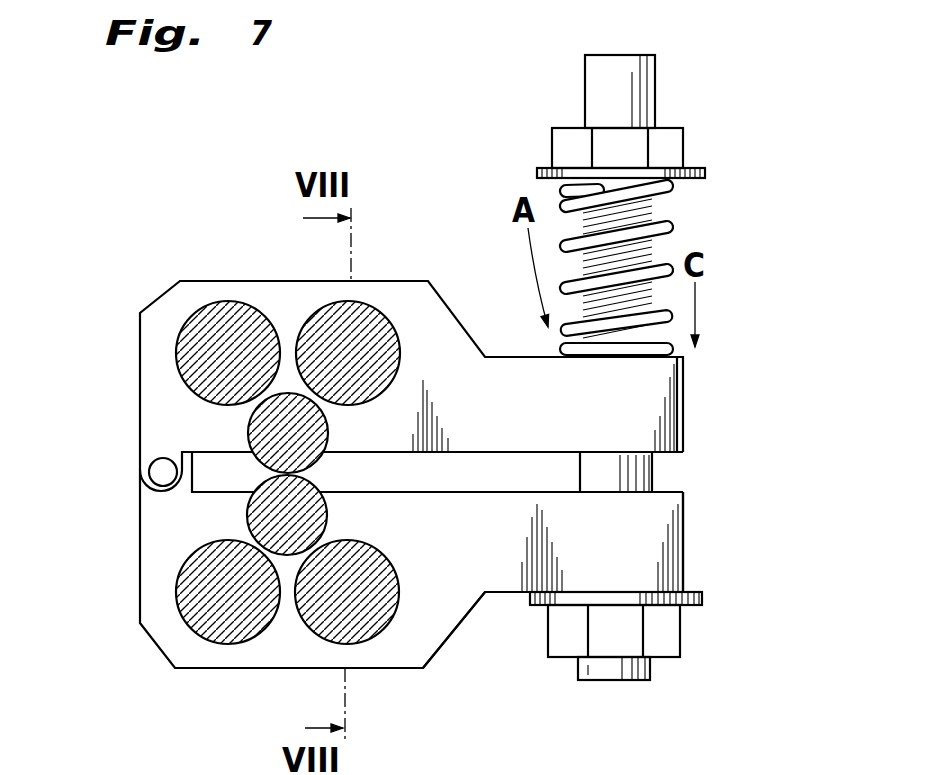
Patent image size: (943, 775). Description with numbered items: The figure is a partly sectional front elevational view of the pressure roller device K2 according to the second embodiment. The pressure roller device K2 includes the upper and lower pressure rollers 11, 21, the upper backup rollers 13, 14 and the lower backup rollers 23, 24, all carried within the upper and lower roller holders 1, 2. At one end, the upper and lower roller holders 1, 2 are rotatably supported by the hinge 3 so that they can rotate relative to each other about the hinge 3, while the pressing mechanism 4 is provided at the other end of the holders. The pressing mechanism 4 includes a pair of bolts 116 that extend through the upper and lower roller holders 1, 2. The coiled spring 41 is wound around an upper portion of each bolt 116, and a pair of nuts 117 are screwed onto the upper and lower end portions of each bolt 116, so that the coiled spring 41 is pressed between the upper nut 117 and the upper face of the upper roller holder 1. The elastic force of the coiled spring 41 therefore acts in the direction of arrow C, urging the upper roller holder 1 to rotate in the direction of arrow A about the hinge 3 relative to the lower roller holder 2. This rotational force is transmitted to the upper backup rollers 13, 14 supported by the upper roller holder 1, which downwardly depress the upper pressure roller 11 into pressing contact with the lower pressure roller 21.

The upper roller holder 1 is at (443, 333).
The lower roller holder 2 is at (503, 577).
The hinge 3 is at (150, 467).
The pressing mechanism 4 is at (693, 383).
The upper pressure roller 11 is at (248, 430).
The upper backup roller 13 is at (212, 315).
The upper backup roller 14 is at (377, 318).
The lower pressure roller 21 is at (247, 513).
The lower backup roller 23 is at (176, 592).
The lower backup roller 24 is at (377, 638).
The coiled spring 41 is at (658, 231).
The bolt 116 is at (653, 480).
The nut 117 is at (682, 130).
The pressure roller device K2 is at (248, 202).